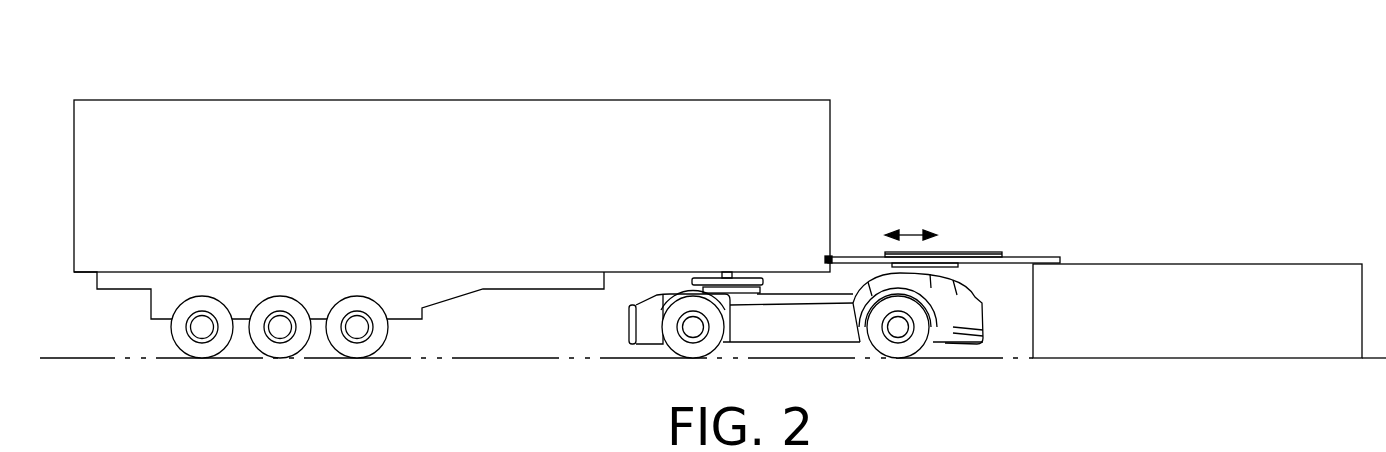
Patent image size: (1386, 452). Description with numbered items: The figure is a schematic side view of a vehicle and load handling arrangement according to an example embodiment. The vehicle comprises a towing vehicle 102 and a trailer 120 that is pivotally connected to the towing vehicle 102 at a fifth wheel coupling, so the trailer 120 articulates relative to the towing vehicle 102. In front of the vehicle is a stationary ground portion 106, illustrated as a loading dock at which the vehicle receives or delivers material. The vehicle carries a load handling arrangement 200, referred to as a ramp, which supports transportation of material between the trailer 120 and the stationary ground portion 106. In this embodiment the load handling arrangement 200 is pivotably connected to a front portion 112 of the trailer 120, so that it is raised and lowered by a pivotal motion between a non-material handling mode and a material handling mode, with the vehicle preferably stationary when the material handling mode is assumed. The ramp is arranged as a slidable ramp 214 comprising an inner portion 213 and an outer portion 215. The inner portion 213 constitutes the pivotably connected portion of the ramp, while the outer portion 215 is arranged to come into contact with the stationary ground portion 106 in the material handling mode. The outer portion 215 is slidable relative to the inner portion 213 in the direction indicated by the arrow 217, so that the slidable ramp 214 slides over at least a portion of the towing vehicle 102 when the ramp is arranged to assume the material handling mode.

The trailer 120 is at (710, 147).
The towing vehicle 102 is at (950, 310).
The front portion 112 is at (828, 263).
The stationary ground portion 106 is at (1147, 317).
The load handling arrangement 200 is at (962, 203).
The inner portion 213 is at (861, 256).
The slidable ramp 214 is at (982, 212).
The outer portion 215 is at (1010, 258).
The arrow 217 is at (912, 230).